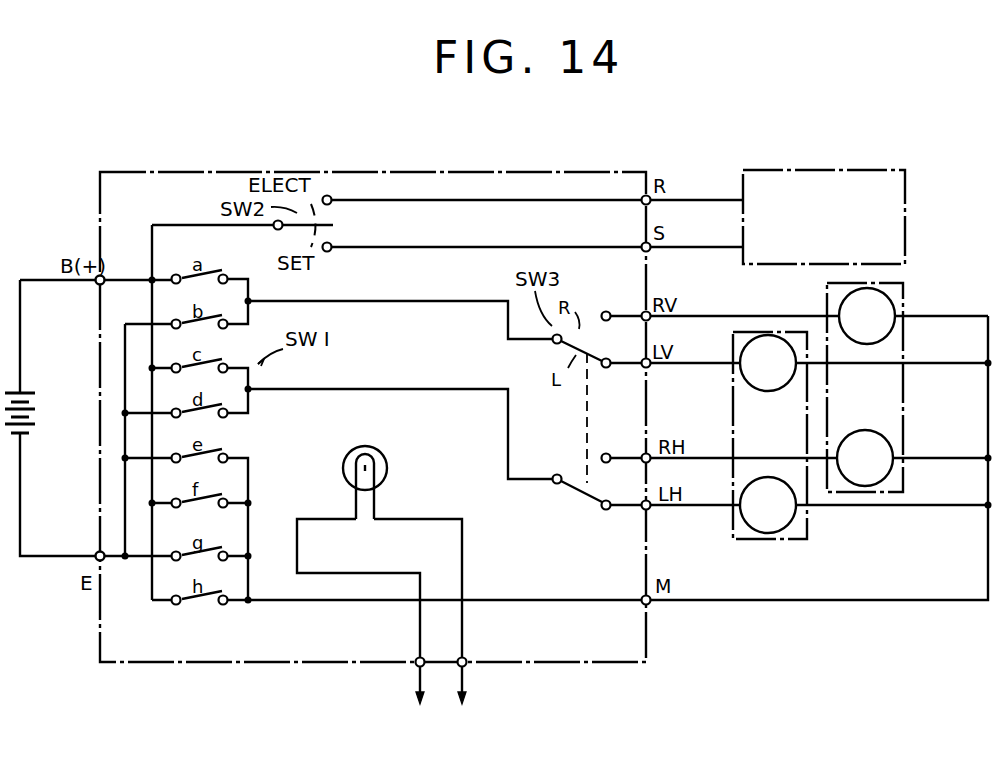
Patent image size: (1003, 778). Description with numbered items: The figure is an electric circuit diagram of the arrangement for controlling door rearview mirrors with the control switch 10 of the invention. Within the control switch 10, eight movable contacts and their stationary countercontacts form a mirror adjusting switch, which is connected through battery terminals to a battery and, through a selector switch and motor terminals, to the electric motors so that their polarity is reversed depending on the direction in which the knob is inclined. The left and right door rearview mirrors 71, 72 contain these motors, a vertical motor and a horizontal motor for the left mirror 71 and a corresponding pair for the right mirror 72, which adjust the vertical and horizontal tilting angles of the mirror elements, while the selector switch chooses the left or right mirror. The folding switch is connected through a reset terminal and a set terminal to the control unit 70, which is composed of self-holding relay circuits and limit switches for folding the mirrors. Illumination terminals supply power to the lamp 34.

The control switch 10 is at (145, 172).
The control unit 70 is at (802, 170).
The left door rearview mirror 71 is at (732, 420).
The right door rearview mirror 72 is at (903, 387).
The lamp 34 is at (380, 451).